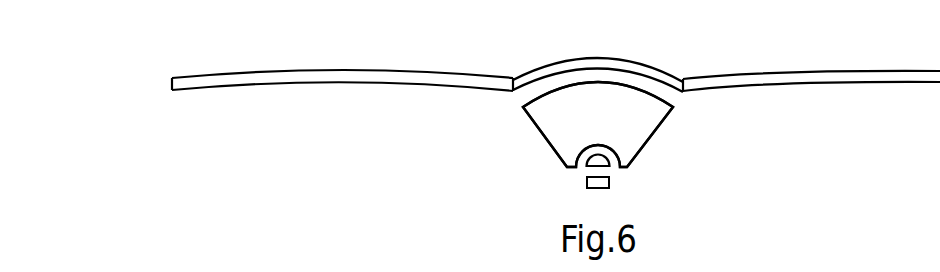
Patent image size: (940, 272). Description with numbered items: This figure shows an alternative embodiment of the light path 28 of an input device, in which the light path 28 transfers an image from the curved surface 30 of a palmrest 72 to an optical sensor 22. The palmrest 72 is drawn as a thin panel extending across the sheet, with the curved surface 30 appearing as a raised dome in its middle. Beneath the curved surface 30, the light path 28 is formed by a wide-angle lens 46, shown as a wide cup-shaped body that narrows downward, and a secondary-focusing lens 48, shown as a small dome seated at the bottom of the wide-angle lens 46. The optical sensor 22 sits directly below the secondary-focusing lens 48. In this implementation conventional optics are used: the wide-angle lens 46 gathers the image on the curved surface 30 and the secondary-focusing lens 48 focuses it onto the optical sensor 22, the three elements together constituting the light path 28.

The optical sensor 22 is at (610, 186).
The light path 28 is at (735, 92).
The curved surface 30 is at (652, 68).
The wide-angle lens 46 is at (647, 116).
The secondary-focusing lens 48 is at (603, 155).
The palmrest 72 is at (782, 77).